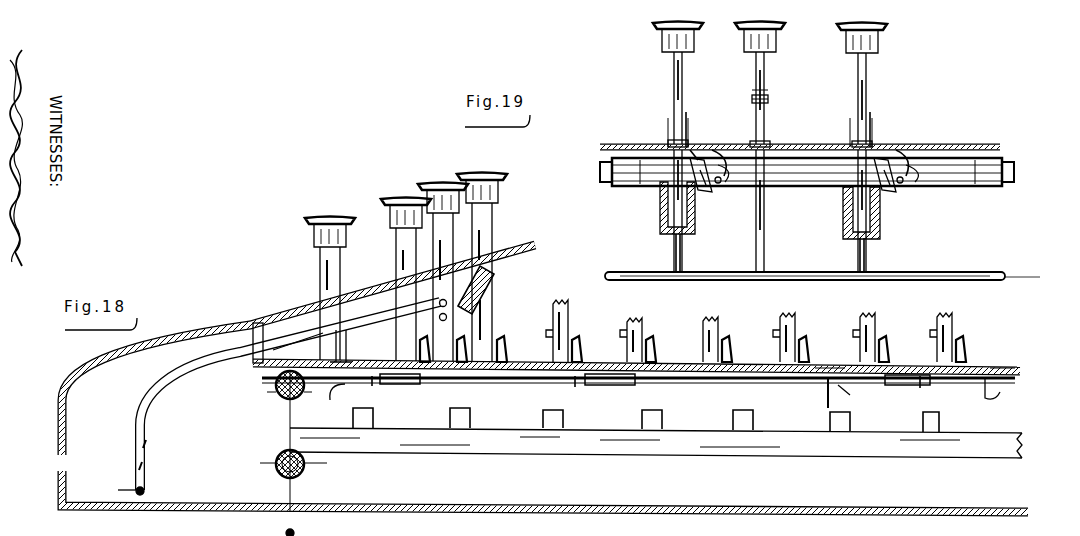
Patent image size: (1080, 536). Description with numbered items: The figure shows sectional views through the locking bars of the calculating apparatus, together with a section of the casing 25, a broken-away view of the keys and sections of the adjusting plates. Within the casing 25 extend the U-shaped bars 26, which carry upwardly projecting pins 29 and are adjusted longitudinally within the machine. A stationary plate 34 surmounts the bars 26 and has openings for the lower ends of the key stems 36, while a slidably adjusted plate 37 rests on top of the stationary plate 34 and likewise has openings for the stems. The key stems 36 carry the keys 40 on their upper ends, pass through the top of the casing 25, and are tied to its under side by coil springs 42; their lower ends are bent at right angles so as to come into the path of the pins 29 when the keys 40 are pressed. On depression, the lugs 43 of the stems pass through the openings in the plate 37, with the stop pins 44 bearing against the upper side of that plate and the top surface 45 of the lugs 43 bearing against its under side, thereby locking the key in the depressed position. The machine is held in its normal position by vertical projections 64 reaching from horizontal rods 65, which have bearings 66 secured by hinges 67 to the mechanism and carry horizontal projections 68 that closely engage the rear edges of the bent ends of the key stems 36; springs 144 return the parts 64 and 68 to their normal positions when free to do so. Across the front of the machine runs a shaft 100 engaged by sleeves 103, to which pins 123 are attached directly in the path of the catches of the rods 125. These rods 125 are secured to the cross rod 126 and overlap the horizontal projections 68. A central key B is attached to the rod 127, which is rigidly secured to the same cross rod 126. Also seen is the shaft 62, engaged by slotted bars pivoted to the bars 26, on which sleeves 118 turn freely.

In FIG. 18, the casing 25 is at (530, 248).
In FIG. 18, the bars 26 is at (440, 428).
In FIG. 19, the bars 26 is at (697, 223).
In FIG. 18, the upwardly projecting pins 29 is at (650, 410).
In FIG. 19, the upwardly projecting pins 29 is at (662, 205).
In FIG. 18, the stationary plate 34 is at (1022, 370).
In FIG. 19, the stationary plate 34 is at (600, 146).
In FIG. 18, the key stems 36 is at (326, 266).
In FIG. 19, the key stems 36 is at (683, 60).
In FIG. 18, the slidably adjusted plate 37 is at (822, 364).
In FIG. 19, the slidably adjusted plate 37 is at (670, 143).
In FIG. 18, the keys 40 is at (325, 223).
In FIG. 19, the keys 40 is at (655, 40).
In FIG. 18, the central key B is at (439, 178).
In FIG. 19, the central key B is at (777, 40).
In FIG. 18, the coil springs 42 is at (489, 279).
In FIG. 18, the lugs 43 is at (504, 345).
In FIG. 18, the stop pins 44 is at (318, 329).
In FIG. 18, the top surface of lugs 45 is at (570, 306).
In FIG. 18, the shaft 62 is at (304, 471).
In FIG. 18, the vertical projections 64 is at (827, 400).
In FIG. 19, the vertical projections 64 is at (692, 186).
In FIG. 18, the horizontal rods 65 is at (840, 392).
In FIG. 19, the horizontal rods 65 is at (721, 184).
In FIG. 18, the bearings 66 is at (398, 383).
In FIG. 19, the bearings 66 is at (713, 149).
In FIG. 18, the hinges 67 is at (375, 380).
In FIG. 19, the hinges 67 is at (691, 147).
In FIG. 18, the horizontal projections 68 is at (330, 380).
In FIG. 19, the horizontal projections 68 is at (670, 144).
In FIG. 18, the shaft 100 is at (292, 400).
In FIG. 19, the shaft 100 is at (605, 172).
In FIG. 18, the sleeves 103 is at (277, 390).
In FIG. 19, the sleeves 103 is at (630, 184).
In FIG. 18, the sleeves 118 is at (277, 471).
In FIG. 18, the pins 123 is at (283, 368).
In FIG. 18, the rods 125 is at (343, 349).
In FIG. 19, the rods 125 is at (688, 119).
In FIG. 18, the cross rod 126 is at (148, 490).
In FIG. 19, the cross rod 126 is at (600, 276).
In FIG. 18, the rod 127 is at (140, 421).
In FIG. 19, the rod 127 is at (754, 108).
In FIG. 18, the springs 144 is at (980, 400).
In FIG. 19, the springs 144 is at (720, 176).